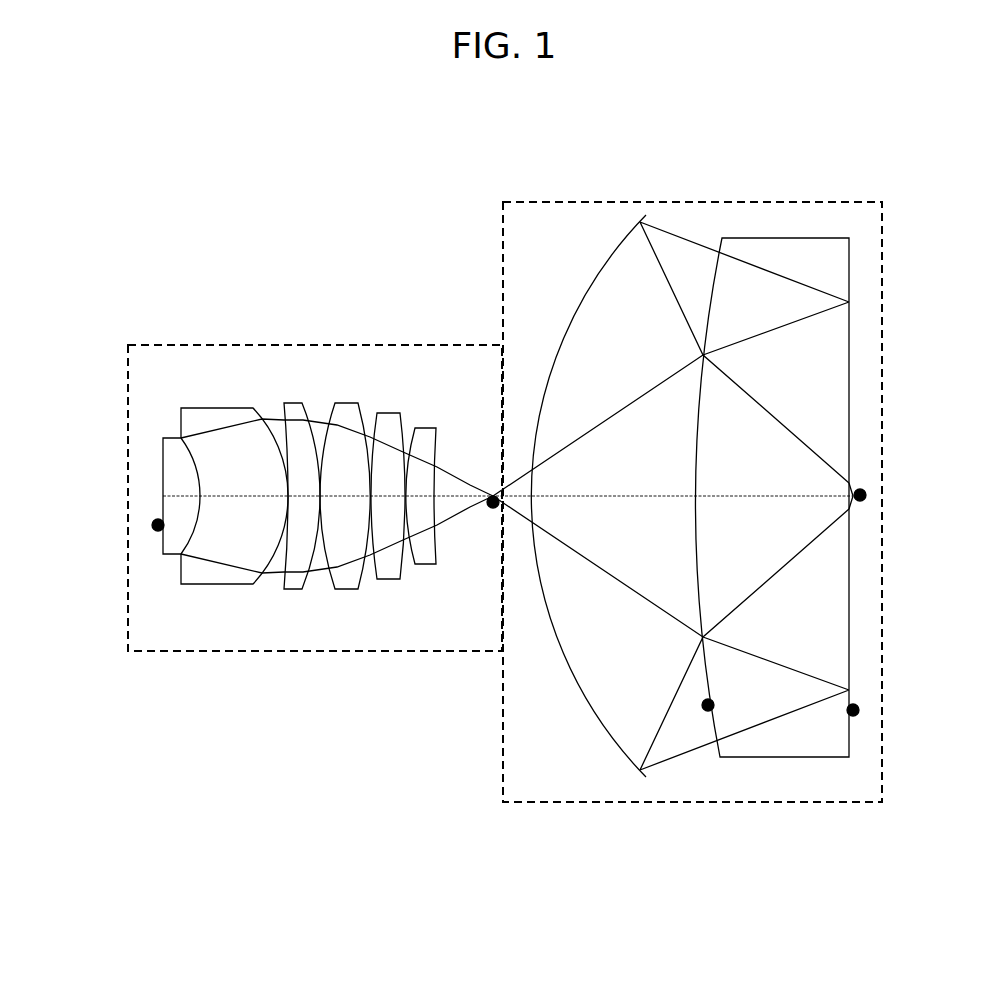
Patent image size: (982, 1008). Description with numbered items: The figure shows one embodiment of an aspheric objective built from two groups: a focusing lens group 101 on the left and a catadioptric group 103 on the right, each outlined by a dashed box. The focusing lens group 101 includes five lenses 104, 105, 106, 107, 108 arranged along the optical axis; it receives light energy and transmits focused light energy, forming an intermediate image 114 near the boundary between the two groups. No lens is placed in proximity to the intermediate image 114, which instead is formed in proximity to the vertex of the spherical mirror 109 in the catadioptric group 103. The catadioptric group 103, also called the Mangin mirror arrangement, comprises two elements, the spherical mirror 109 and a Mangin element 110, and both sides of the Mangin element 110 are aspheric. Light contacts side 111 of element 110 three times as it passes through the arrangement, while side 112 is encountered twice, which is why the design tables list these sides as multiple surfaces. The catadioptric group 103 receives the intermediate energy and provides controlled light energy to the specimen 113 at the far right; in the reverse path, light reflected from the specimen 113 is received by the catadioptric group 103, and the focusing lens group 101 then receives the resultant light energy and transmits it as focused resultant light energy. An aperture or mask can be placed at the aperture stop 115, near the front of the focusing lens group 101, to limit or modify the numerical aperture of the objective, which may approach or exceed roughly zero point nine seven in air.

The focusing lens group 101 is at (315, 475).
The catadioptric group 103 is at (692, 477).
The lens 104 is at (225, 476).
The lens 105 is at (292, 478).
The lens 106 is at (345, 478).
The lens 107 is at (392, 477).
The lens 108 is at (436, 481).
The spherical mirror 109 is at (588, 496).
The Mangin element 110 is at (772, 483).
The side of Mangin element 111 is at (708, 705).
The side of Mangin element 112 is at (853, 710).
The specimen 113 is at (860, 495).
The intermediate image 114 is at (493, 502).
The aperture stop 115 is at (158, 525).